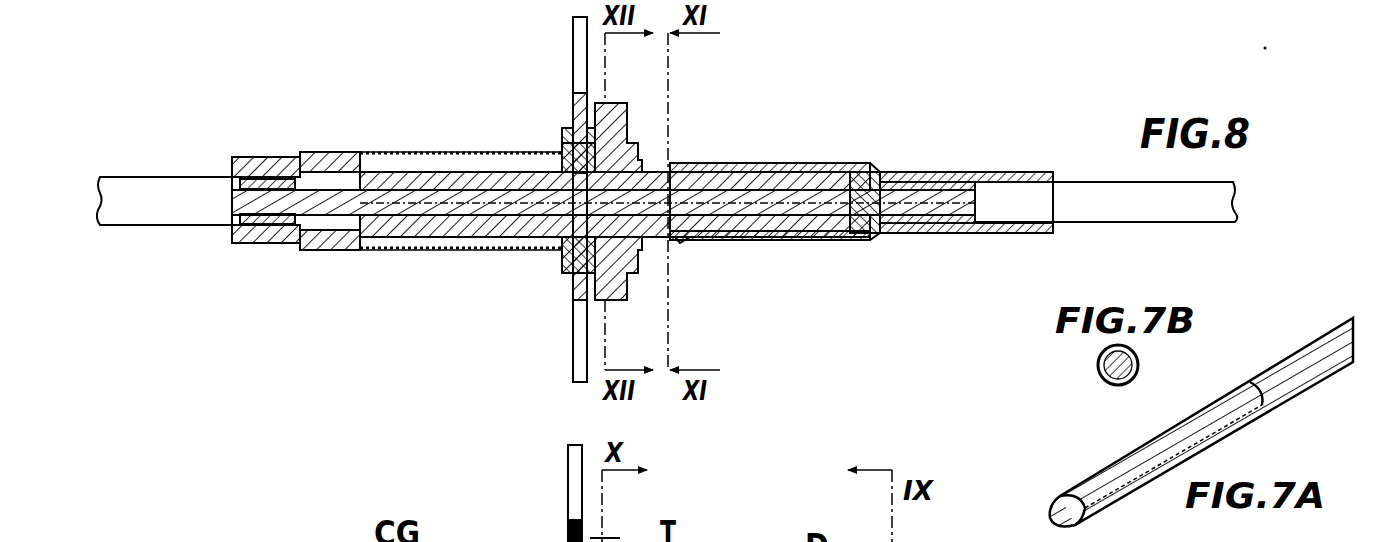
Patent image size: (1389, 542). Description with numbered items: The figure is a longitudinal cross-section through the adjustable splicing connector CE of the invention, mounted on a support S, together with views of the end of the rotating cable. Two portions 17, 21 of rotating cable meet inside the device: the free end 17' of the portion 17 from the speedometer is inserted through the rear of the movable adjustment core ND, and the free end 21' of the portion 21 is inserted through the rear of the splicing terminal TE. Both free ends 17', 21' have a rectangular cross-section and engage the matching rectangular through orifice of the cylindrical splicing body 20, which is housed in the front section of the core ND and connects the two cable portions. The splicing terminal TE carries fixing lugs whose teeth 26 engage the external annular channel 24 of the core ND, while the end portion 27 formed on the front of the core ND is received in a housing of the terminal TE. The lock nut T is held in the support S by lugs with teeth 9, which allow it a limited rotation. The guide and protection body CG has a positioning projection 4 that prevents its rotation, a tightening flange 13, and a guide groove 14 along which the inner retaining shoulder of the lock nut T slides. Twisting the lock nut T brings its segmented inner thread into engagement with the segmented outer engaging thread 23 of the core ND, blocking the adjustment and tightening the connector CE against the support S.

The portion of rotating cable 17 is at (164, 168).
The portion of rotating cable 21 is at (1105, 169).
The free end of the portion of rotating cable 17' is at (744, 247).
The free end of the portion of rotating cable 21' is at (811, 247).
The teeth 9 is at (567, 128).
The positioning projection 4 is at (566, 150).
The tightening flange 13 is at (560, 252).
The guide groove 14 is at (645, 140).
The cylindrical splicing body 20 is at (819, 163).
The segmented outer engaging thread 23 is at (436, 253).
The external annular channel 24 is at (678, 242).
The teeth 26 is at (690, 163).
The end portion 27 is at (761, 163).
The guide and protection body CG is at (410, 121).
The movable adjustment core ND is at (290, 252).
The support S is at (571, 320).
The lock nut T is at (640, 126).
The splicing terminal TE is at (955, 164).
The splicing connector CE is at (878, 399).